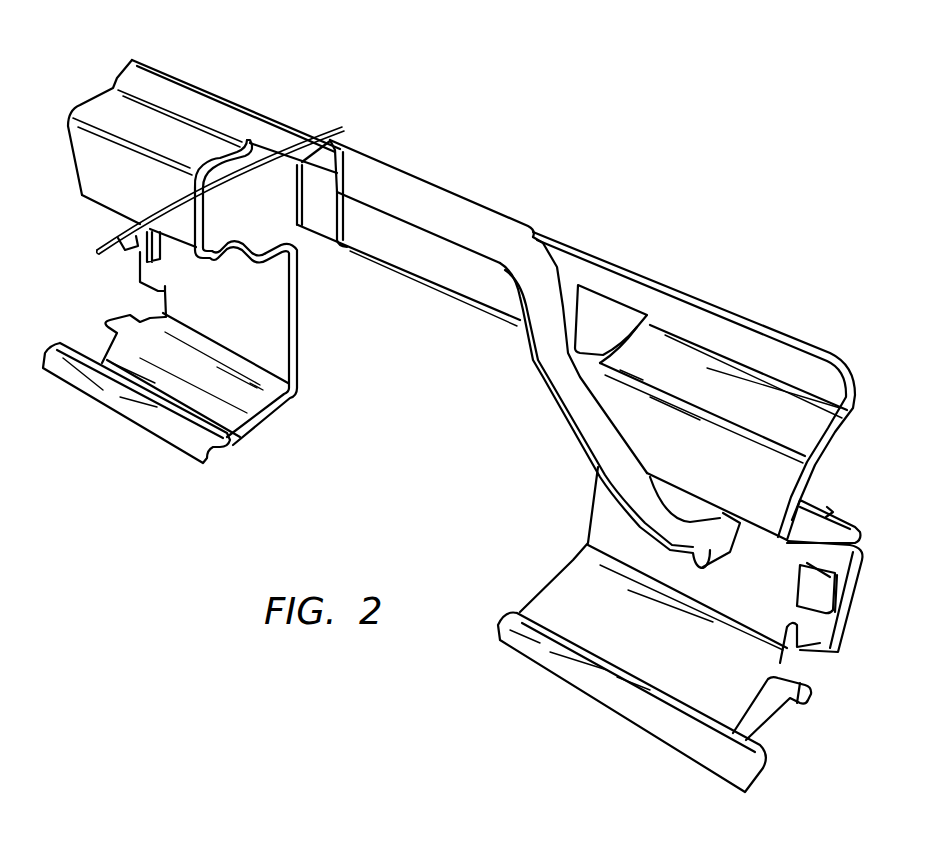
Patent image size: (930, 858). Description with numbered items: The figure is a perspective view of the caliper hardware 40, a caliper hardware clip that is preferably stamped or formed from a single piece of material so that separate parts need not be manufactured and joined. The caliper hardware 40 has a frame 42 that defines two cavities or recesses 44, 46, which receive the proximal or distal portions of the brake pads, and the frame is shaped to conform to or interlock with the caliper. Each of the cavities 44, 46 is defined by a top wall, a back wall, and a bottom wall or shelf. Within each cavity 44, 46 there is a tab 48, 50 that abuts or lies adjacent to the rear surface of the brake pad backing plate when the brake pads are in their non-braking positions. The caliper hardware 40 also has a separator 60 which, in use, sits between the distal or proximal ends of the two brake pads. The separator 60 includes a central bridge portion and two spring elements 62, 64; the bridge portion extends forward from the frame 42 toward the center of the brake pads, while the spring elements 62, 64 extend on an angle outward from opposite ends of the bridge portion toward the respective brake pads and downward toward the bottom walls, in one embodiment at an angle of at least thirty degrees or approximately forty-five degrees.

The caliper hardware 40 is at (552, 195).
The frame 42 is at (728, 332).
The cavity 44 is at (245, 400).
The cavity 46 is at (573, 595).
The tab 48 is at (138, 273).
The tab 50 is at (828, 600).
The separator 60 is at (432, 186).
The spring element 62 is at (235, 172).
The spring element 64 is at (578, 440).